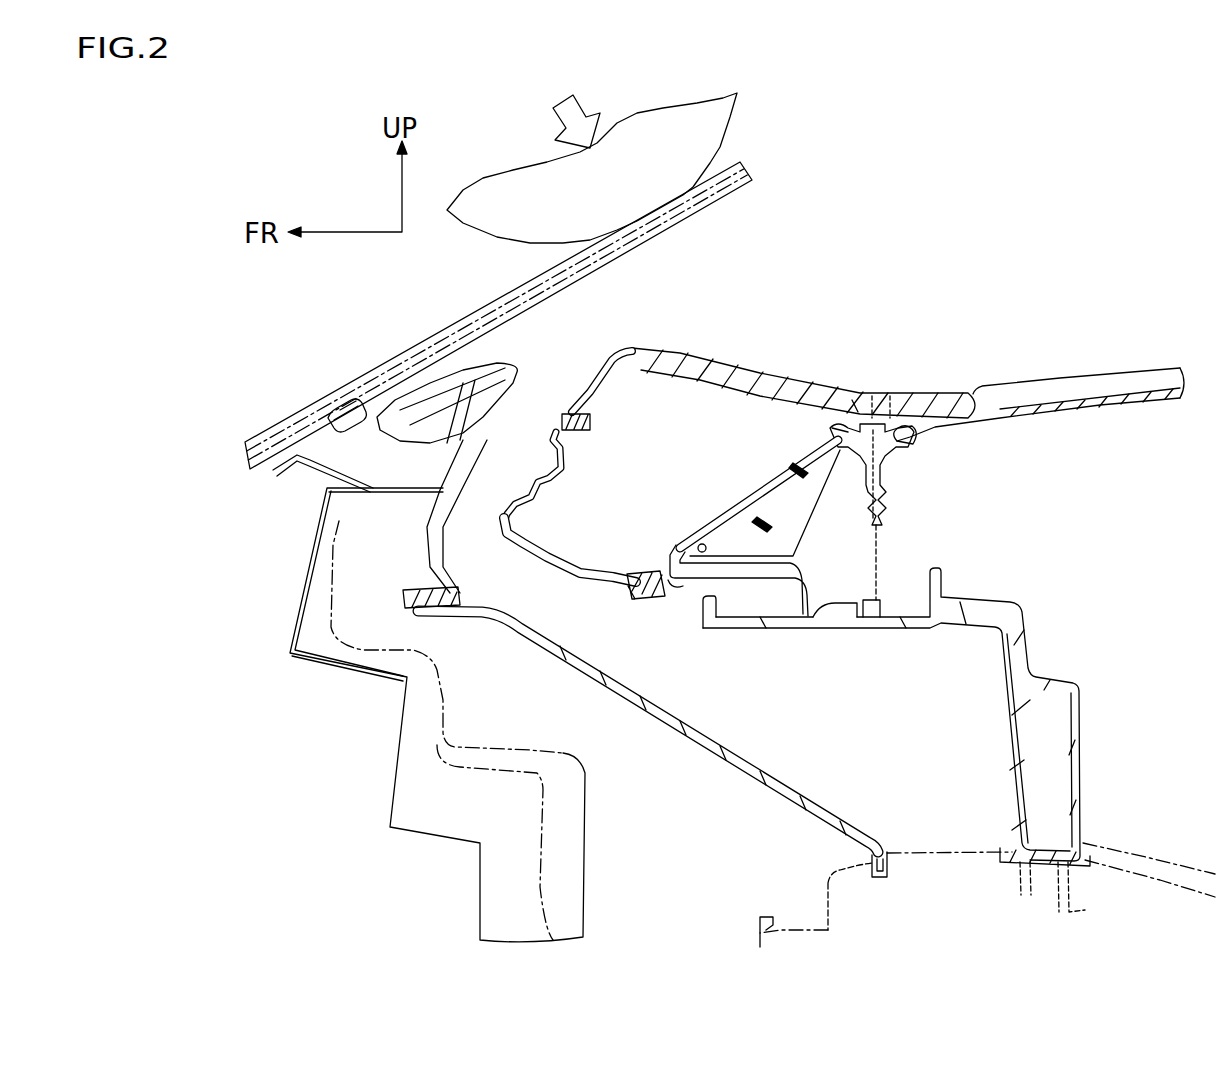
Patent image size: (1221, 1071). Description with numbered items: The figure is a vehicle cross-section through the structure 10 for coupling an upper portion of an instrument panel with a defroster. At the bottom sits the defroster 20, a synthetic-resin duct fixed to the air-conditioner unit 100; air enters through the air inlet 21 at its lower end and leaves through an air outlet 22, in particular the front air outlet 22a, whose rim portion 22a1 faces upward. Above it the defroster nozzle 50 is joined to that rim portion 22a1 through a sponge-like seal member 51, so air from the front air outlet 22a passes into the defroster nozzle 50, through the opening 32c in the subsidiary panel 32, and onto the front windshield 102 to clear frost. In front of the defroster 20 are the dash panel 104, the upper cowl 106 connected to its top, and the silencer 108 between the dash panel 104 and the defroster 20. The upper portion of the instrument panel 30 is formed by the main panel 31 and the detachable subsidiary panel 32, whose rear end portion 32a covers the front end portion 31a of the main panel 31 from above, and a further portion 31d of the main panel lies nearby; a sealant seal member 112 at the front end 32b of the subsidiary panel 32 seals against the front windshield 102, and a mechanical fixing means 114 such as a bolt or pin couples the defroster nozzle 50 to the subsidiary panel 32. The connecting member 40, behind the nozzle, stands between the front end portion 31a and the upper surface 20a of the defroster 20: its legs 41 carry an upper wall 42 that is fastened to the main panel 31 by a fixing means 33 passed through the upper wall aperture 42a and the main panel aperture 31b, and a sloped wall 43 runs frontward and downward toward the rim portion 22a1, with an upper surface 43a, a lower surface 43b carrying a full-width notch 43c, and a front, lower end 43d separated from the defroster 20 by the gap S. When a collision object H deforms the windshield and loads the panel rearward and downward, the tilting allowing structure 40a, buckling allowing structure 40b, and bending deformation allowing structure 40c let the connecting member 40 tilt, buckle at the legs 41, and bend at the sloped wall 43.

The structure for coupling an upper portion of an instrument panel with a defroster 10 is at (936, 266).
The defroster 20 is at (816, 740).
The upper surface of the defroster 20a is at (886, 622).
The air inlet 21 is at (881, 847).
The air outlet 22 is at (648, 711).
The front air outlet 22a is at (648, 711).
The rim portion of the front air outlet 22a1 is at (661, 602).
The upper portion of an instrument panel 30 is at (1162, 370).
The main panel 31 is at (974, 395).
The front end portion of the main panel 31a is at (915, 440).
The main panel aperture 31b is at (922, 369).
The edge portion 31d is at (833, 428).
The subsidiary panel 32 is at (656, 420).
The rear end portion of the subsidiary panel 32a is at (950, 398).
The front end of the subsidiary panel 32b is at (351, 430).
The opening 32c is at (586, 386).
The fixing means 33 is at (856, 407).
The connecting member 40 is at (787, 553).
The tilting allowing structure 40a is at (851, 625).
The buckling allowing structure 40b is at (878, 548).
The bending deformation allowing structure 40c is at (797, 468).
The legs 41 is at (878, 529).
The upper wall 42 is at (902, 474).
The upper wall aperture 42a is at (888, 458).
The sloped wall 43 is at (719, 525).
The upper surface of the sloped wall 43a is at (683, 477).
The lower surface of the sloped wall 43b is at (699, 543).
The notch 43c is at (765, 503).
The front, lower end of the sloped wall 43d is at (670, 553).
The defroster nozzle 50 is at (555, 545).
The seal member 51 is at (417, 588).
The air-conditioner unit 100 is at (822, 902).
The front windshield 102 is at (443, 331).
The dash panel 104 is at (464, 715).
The upper cowl 106 is at (275, 478).
The silencer 108 is at (572, 855).
The seal member 112 is at (343, 414).
The mechanical fixing means 114 is at (442, 440).
The collision object H is at (703, 131).
The gap S is at (700, 602).